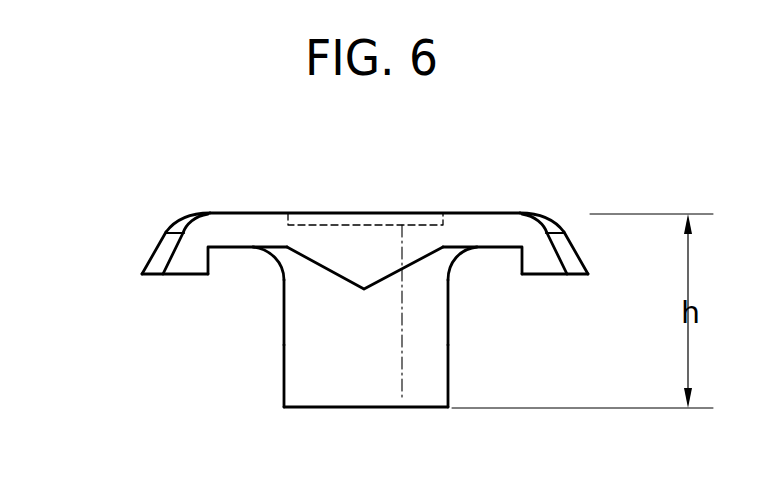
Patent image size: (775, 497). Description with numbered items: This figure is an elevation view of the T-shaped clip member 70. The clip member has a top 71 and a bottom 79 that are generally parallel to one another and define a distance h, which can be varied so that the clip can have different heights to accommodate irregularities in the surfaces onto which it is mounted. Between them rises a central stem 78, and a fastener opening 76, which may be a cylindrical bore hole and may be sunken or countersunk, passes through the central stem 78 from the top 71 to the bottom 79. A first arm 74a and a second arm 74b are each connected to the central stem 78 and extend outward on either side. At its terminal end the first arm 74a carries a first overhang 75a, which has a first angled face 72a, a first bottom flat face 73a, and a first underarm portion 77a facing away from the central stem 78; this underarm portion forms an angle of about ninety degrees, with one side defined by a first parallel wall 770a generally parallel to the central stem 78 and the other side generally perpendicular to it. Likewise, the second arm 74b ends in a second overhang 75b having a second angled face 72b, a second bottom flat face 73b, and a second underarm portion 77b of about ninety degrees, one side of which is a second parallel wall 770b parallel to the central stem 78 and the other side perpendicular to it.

The T-shaped clip member 70 is at (466, 188).
The top 71 is at (252, 215).
The first angled face 72a is at (575, 249).
The second angled face 72b is at (157, 250).
The first bottom flat face 73a is at (540, 253).
The second bottom flat face 73b is at (190, 252).
The first arm 74a is at (508, 220).
The second arm 74b is at (214, 216).
The first overhang 75a is at (557, 275).
The second overhang 75b is at (173, 275).
The fastener opening 76 is at (358, 217).
The first underarm portion 77a is at (487, 277).
The second underarm portion 77b is at (243, 277).
The first parallel wall 770a is at (518, 273).
The second parallel wall 770b is at (212, 273).
The central stem 78 is at (284, 393).
The bottom 79 is at (295, 408).